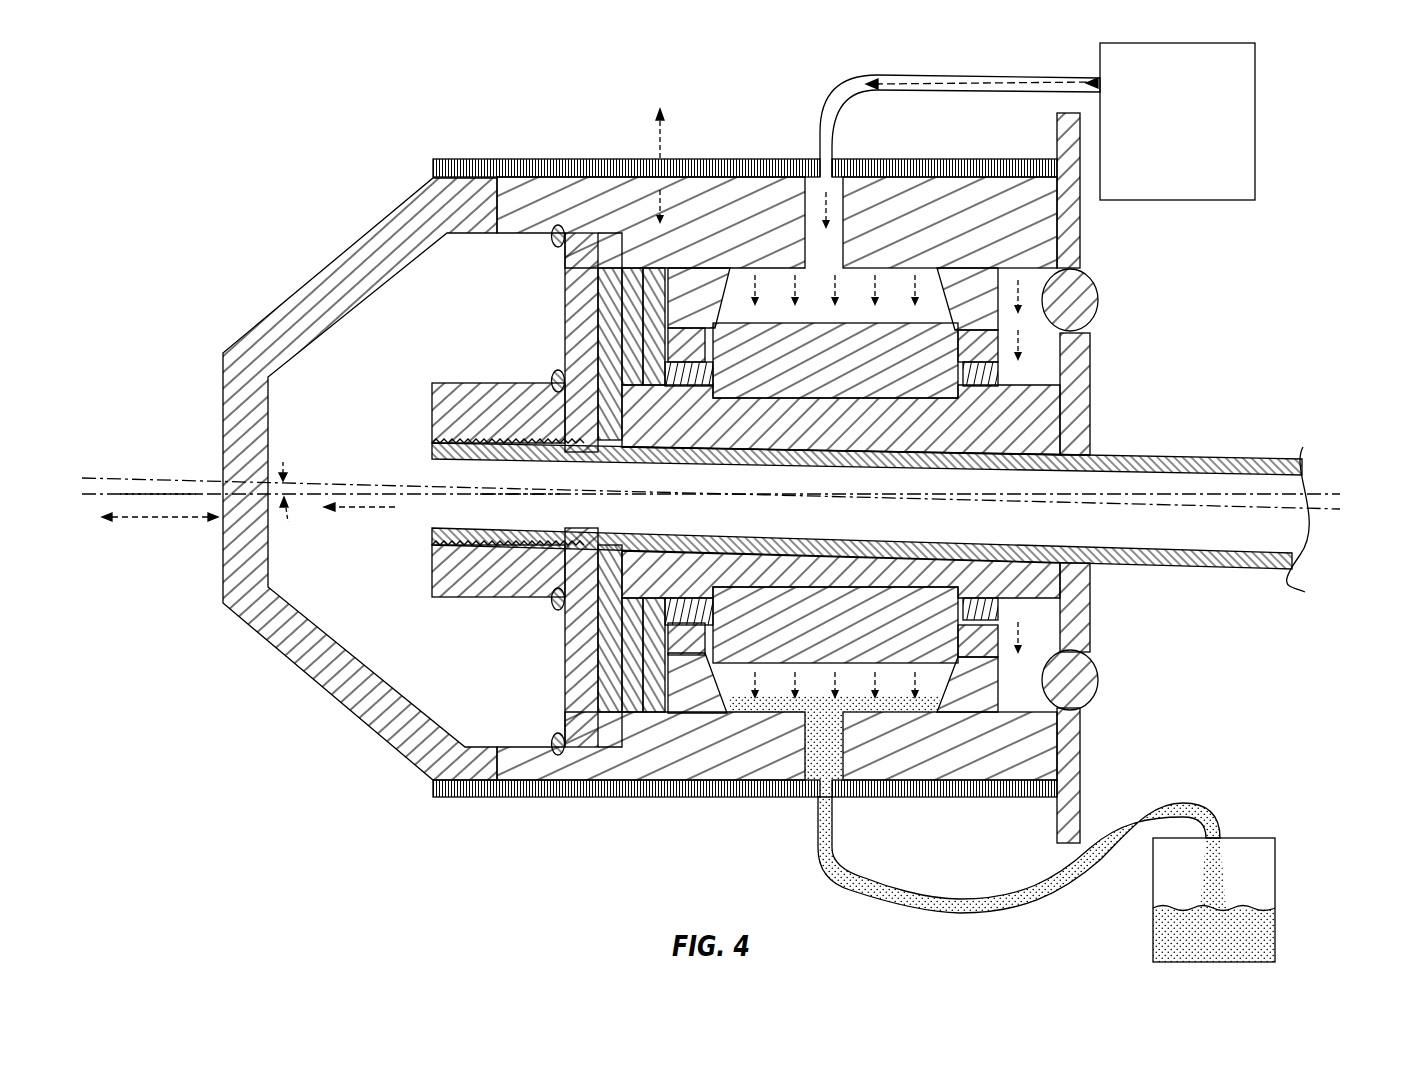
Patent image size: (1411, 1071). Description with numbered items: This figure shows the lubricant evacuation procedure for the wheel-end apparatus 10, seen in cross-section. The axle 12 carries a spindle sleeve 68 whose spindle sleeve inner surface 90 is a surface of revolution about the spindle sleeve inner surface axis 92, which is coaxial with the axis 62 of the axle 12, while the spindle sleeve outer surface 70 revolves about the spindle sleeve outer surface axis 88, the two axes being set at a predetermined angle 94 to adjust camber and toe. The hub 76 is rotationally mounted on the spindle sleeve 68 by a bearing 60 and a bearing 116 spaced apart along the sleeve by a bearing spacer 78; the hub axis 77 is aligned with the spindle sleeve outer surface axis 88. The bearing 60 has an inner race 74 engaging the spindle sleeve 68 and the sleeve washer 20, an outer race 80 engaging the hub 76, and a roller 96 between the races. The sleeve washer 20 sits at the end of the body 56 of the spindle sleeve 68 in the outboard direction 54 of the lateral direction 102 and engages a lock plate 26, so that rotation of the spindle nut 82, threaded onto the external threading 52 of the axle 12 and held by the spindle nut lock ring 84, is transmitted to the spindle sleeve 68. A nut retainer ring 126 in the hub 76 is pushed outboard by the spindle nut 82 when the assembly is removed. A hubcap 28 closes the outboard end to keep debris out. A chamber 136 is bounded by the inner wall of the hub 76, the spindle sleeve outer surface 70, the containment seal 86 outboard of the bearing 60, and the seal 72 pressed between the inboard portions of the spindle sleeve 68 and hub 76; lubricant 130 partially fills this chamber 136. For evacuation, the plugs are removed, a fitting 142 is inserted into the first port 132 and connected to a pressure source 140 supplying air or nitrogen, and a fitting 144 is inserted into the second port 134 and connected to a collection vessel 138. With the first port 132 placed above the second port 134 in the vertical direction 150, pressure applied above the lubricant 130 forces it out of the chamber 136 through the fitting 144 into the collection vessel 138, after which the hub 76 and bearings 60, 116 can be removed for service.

The apparatus 10 is at (1313, 113).
The axle 12 is at (1222, 457).
The sleeve washer 20 is at (633, 662).
The lock plate 26 is at (607, 623).
The hubcap 28 is at (338, 263).
The external threading 52 is at (433, 567).
The outboard direction 54 is at (363, 507).
The body 56 is at (997, 440).
The bearing 60 is at (686, 639).
The axis 62 is at (162, 478).
The spindle sleeve 68 is at (1082, 392).
The spindle sleeve outer surface 70 is at (766, 389).
The seal 72 is at (1085, 290).
The inner race 74 is at (688, 590).
The hub 76 is at (1062, 247).
The hub axis 77 is at (148, 493).
The bearing spacer 78 is at (896, 357).
The outer race 80 is at (697, 287).
The spindle nut 82 is at (442, 582).
The spindle nut lock ring 84 is at (550, 600).
The containment seal 86 is at (652, 370).
The spindle sleeve outer surface axis 88 is at (108, 497).
The spindle sleeve inner surface 90 is at (858, 550).
The spindle sleeve inner surface axis 92 is at (513, 487).
The angle 94 is at (290, 474).
The roller 96 is at (687, 342).
The lateral direction 102 is at (128, 520).
The bearing 116 is at (992, 608).
The nut retainer ring 126 is at (553, 740).
The lubricant 130 is at (1072, 712).
The first port 132 is at (835, 248).
The second port 134 is at (840, 726).
The chamber 136 is at (1053, 647).
The collection vessel 138 is at (1278, 863).
The pressure source 140 is at (1250, 162).
The fitting 142 is at (800, 232).
The fitting 144 is at (803, 752).
The vertical direction 150 is at (665, 132).